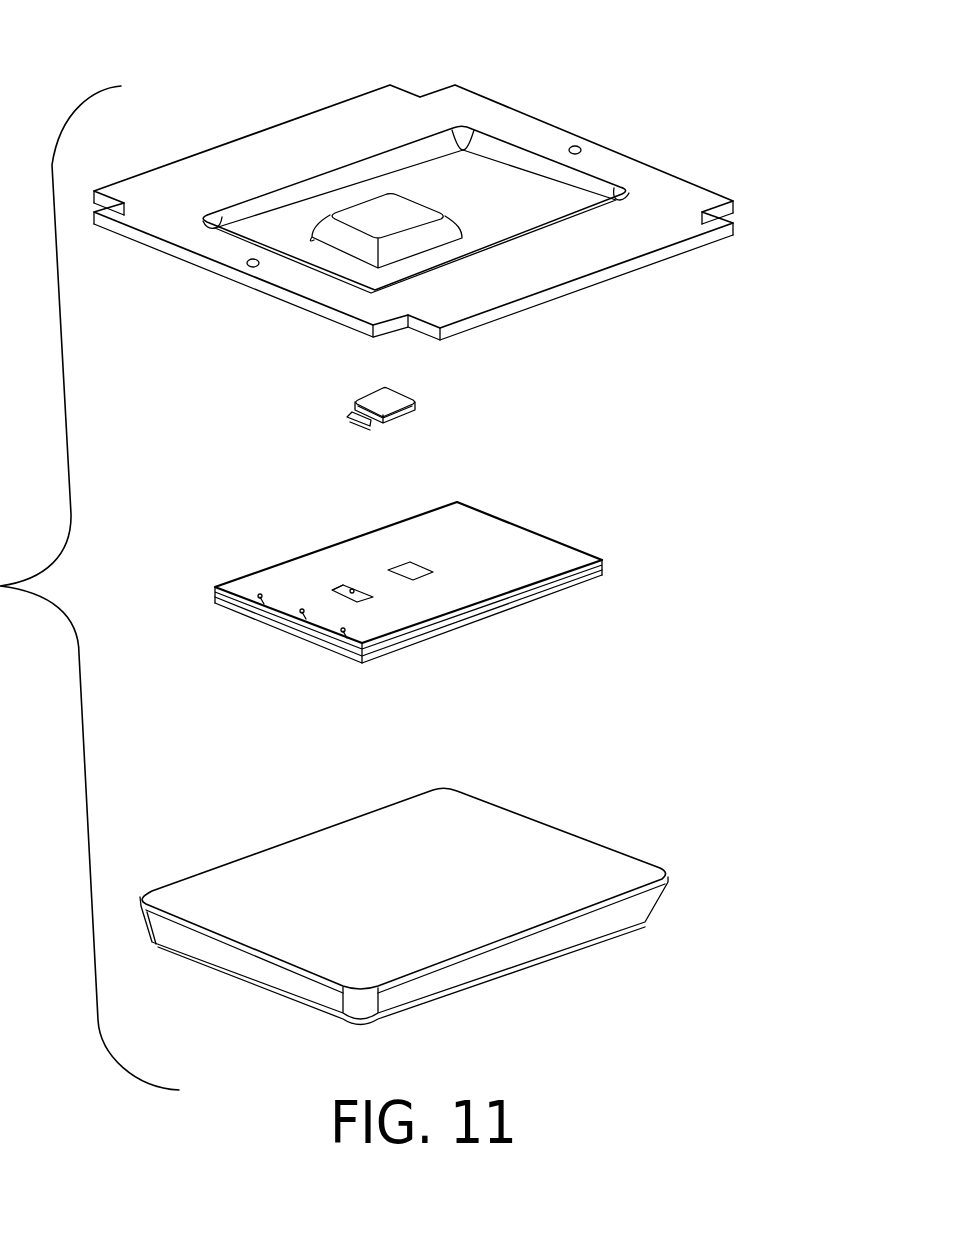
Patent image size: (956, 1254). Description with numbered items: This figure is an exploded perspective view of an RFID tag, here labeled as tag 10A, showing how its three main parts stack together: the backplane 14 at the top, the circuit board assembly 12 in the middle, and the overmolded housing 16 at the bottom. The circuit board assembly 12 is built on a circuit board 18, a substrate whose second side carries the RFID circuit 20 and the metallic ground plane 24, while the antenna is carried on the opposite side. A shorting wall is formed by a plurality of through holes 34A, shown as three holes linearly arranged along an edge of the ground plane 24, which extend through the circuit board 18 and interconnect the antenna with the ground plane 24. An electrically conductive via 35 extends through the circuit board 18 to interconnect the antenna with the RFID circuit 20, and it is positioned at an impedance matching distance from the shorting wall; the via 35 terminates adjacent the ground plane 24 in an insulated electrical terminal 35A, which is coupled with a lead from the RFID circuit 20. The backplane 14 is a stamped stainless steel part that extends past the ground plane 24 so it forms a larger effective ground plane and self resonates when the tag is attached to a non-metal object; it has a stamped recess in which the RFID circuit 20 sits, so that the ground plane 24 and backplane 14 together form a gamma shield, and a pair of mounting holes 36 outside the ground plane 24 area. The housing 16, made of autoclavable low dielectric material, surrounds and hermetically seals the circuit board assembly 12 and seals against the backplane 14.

The electronic device 10A is at (748, 581).
The circuit board assembly 12 is at (454, 544).
The backplane 14 is at (413, 178).
The overmolded housing 16 is at (561, 972).
The circuit board 18 is at (604, 561).
The RFID circuit 20 is at (373, 392).
The metallic ground plane 24 is at (443, 522).
The through holes 34A is at (345, 632).
The electrically conductive via 35 is at (350, 583).
The insulated electrical terminal 35A is at (333, 590).
The mounting holes 36 is at (580, 146).